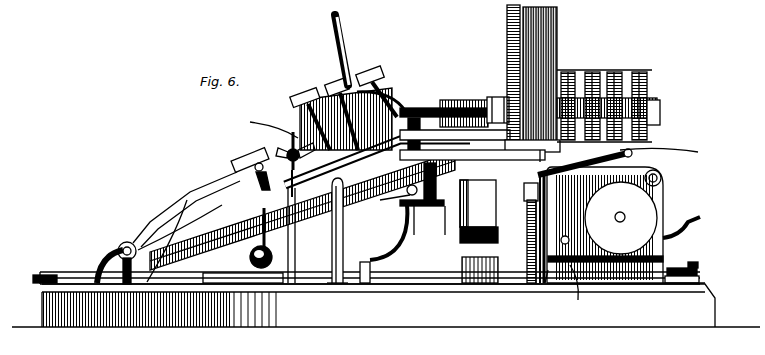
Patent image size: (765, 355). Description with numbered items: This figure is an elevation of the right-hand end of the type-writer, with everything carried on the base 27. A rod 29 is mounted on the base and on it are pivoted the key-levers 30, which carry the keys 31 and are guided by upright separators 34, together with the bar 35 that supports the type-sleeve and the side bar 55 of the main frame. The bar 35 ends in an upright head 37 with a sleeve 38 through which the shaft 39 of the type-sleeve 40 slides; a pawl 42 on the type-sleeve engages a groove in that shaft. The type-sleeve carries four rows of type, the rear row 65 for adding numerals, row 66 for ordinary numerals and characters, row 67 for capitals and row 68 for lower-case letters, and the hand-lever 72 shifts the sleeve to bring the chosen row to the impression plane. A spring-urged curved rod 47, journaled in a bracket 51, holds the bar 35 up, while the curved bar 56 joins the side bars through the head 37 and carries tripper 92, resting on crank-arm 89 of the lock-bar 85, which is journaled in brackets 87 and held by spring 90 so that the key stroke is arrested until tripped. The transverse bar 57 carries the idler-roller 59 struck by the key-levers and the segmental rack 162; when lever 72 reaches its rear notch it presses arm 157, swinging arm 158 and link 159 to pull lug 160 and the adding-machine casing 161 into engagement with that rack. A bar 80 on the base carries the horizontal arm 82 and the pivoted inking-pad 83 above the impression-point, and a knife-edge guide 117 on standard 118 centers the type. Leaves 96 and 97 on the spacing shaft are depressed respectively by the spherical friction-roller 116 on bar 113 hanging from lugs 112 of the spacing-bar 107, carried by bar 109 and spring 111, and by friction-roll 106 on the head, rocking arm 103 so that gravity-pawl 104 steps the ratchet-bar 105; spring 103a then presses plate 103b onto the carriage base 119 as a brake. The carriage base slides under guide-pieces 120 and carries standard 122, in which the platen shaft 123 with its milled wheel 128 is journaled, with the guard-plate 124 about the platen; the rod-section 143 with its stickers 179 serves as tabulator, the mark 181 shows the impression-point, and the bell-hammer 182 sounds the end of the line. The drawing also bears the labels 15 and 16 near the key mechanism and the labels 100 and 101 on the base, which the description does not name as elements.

The lever bar 15 is at (330, 124).
The key rod 16 is at (394, 96).
The base 27 is at (487, 322).
The rod 29 is at (106, 268).
The key-levers 30 is at (325, 230).
The keys 31 is at (341, 111).
The upright separators 34 is at (330, 262).
The bar 35 is at (318, 244).
The upright bar or head 37 is at (450, 226).
The sleeve 38 is at (456, 100).
The shaft of the type-sleeve 39 is at (434, 100).
The type-sleeve 40 is at (650, 90).
The pawl 42 is at (660, 118).
The curved rod 47 is at (420, 226).
The bracket 51 is at (372, 272).
The side bar 55 is at (238, 214).
The downwardly-curved bar 56 is at (443, 188).
The transverse flat bar 57 is at (535, 166).
The idler-roller 59 is at (500, 97).
The row of type 65 is at (572, 74).
The row of type 66 is at (595, 74).
The row of type 67 is at (617, 72).
The row of type 68 is at (645, 72).
The hand-lever 72 is at (353, 50).
The bar 80 is at (536, 264).
The horizontal arm 82 is at (648, 165).
The inking-pad 83 is at (663, 150).
The bar or lock 85 is at (462, 278).
The brackets 87 is at (390, 200).
The crank-arm 89 is at (423, 207).
The spring 90 is at (408, 167).
The tripper 92 is at (370, 167).
The plate or leaf 96 is at (245, 273).
The plate or leaf 97 is at (462, 284).
The base block 100 is at (137, 309).
The stop 101 is at (60, 272).
The upwardly-projecting arm 103 is at (527, 222).
The spring 103a is at (548, 284).
The plate 103b is at (589, 293).
The gravity-pawl 104 is at (600, 205).
The ratchet-bar 105 is at (605, 249).
The friction-roll 106 is at (462, 244).
The spacing-bar 107 is at (243, 158).
The bar 109 is at (192, 196).
The spring 111 is at (178, 222).
The lugs 112 is at (285, 152).
The bar 113 is at (256, 252).
The spherical friction-roller 116 is at (257, 309).
The knife-edge guide 117 is at (524, 196).
The standard 118 is at (527, 242).
The base of the paper-carriage 119 is at (655, 284).
The guide-pieces 120 is at (700, 280).
The standard 122 is at (664, 192).
The shaft of the platen 123 is at (633, 217).
The guard-plate 124 is at (690, 220).
The milled wheel 128 is at (618, 233).
The rod-section 143 is at (279, 181).
The upper arm 157 is at (402, 95).
The lower arm 158 is at (455, 106).
The link 159 is at (478, 203).
The lug 160 is at (548, 160).
The casing 161 is at (548, 56).
The segmental rack 162 is at (507, 28).
The points or stickers 179 is at (262, 126).
The mark 181 is at (690, 268).
The bell-hammer 182 is at (696, 272).